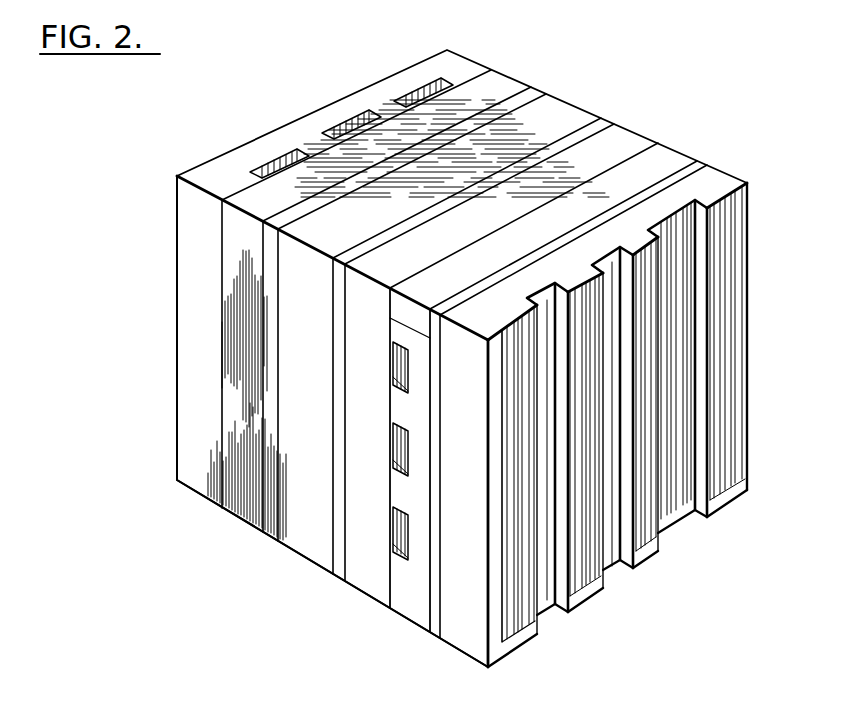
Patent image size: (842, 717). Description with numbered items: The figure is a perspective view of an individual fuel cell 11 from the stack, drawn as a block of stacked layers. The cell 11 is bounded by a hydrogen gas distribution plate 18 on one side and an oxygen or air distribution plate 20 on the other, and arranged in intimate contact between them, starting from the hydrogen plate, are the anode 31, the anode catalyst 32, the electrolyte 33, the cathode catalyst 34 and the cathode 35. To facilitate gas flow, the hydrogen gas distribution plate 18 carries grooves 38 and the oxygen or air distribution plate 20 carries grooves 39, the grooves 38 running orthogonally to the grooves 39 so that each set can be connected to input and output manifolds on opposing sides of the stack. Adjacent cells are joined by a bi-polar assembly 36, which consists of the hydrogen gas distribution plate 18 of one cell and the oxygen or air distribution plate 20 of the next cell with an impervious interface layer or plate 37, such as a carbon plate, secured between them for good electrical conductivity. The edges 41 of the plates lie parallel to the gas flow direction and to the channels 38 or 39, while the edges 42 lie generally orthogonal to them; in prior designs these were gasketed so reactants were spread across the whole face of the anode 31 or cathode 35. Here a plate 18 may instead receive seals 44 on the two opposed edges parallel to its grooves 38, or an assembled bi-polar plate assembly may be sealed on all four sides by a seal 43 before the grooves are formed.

The fuel cell 11 is at (158, 232).
The hydrogen gas distribution plate 18 is at (421, 67).
The oxygen or air distribution plate 20 is at (403, 584).
The anode 31 is at (496, 89).
The anode catalyst 32 is at (526, 97).
The electrolyte 33 is at (563, 115).
The cathode catalyst 34 is at (620, 142).
The cathode 35 is at (656, 157).
The bi-polar assembly 36 is at (420, 641).
The impervious interface layer or plate 37 is at (718, 181).
The grooves 38 is at (352, 118).
The grooves 39 is at (402, 452).
The edges 41 is at (555, 236).
The edges 42 is at (645, 234).
The seal 43 is at (746, 361).
The seals 44 is at (463, 66).